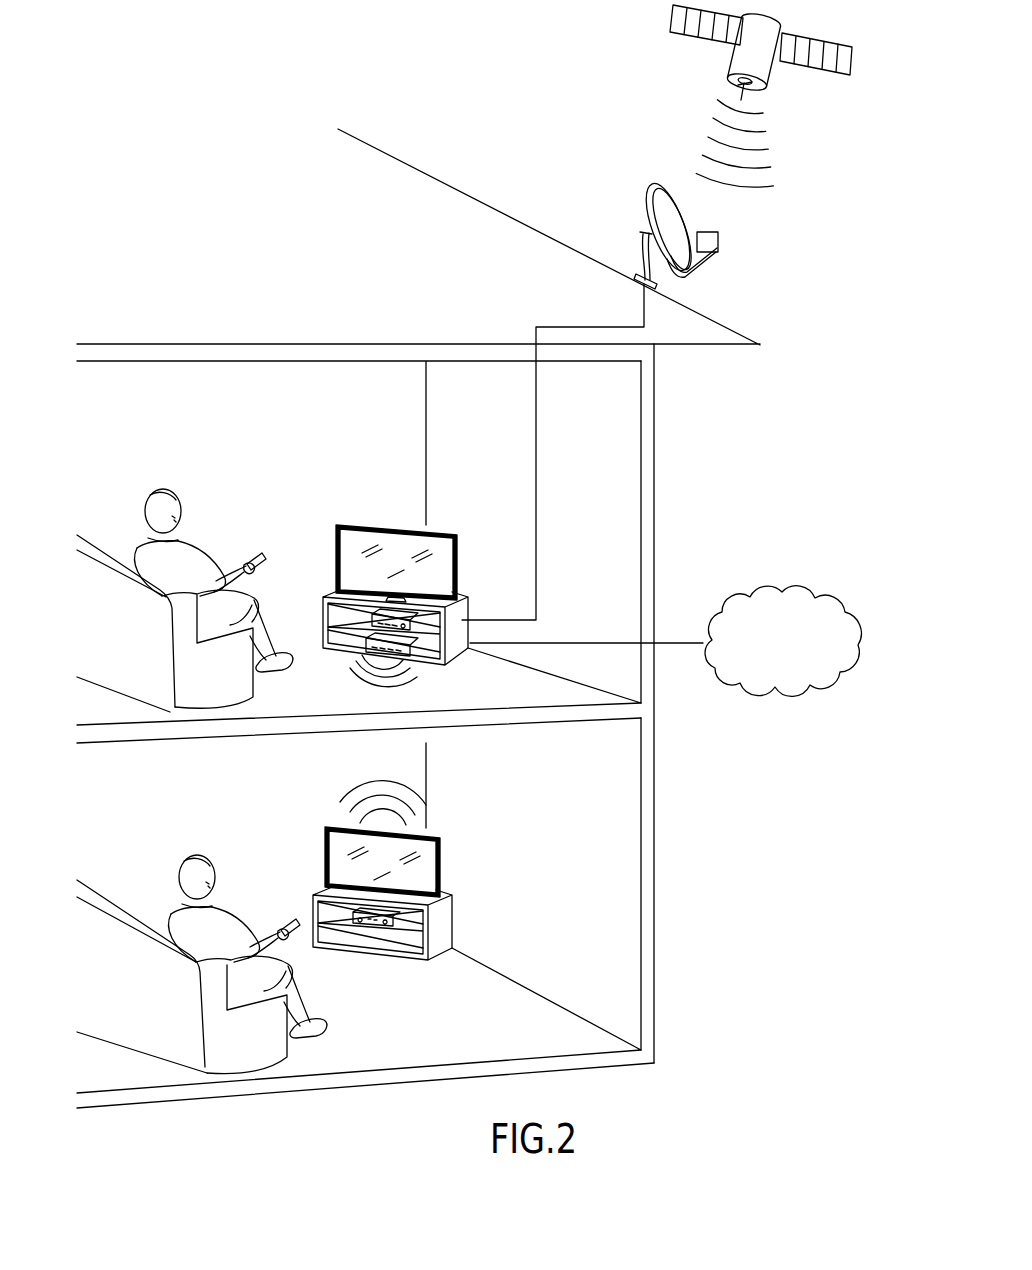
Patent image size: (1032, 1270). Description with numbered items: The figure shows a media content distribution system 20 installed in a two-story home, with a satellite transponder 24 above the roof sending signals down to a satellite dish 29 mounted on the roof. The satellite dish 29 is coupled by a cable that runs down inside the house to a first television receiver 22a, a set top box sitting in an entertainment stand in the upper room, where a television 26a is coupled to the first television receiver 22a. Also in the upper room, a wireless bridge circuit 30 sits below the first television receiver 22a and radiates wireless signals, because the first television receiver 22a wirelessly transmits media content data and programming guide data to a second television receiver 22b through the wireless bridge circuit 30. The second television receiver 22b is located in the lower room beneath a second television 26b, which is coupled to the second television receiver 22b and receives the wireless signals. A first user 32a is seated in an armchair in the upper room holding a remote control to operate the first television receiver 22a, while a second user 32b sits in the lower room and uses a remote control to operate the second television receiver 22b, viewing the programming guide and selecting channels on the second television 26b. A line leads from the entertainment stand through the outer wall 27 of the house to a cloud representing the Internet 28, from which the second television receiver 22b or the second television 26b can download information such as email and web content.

The media content distribution system 20 is at (732, 437).
The first television receiver 22a is at (376, 620).
The second television receiver 22b is at (400, 926).
The satellite transponder 24 is at (781, 68).
The television 26a is at (382, 526).
The second television 26b is at (323, 851).
The wall of house 27 is at (655, 800).
The Internet 28 is at (768, 587).
The satellite dish 29 is at (708, 267).
The wireless bridge circuit 30 is at (352, 652).
The first user 32a is at (158, 489).
The second user 32b is at (198, 854).